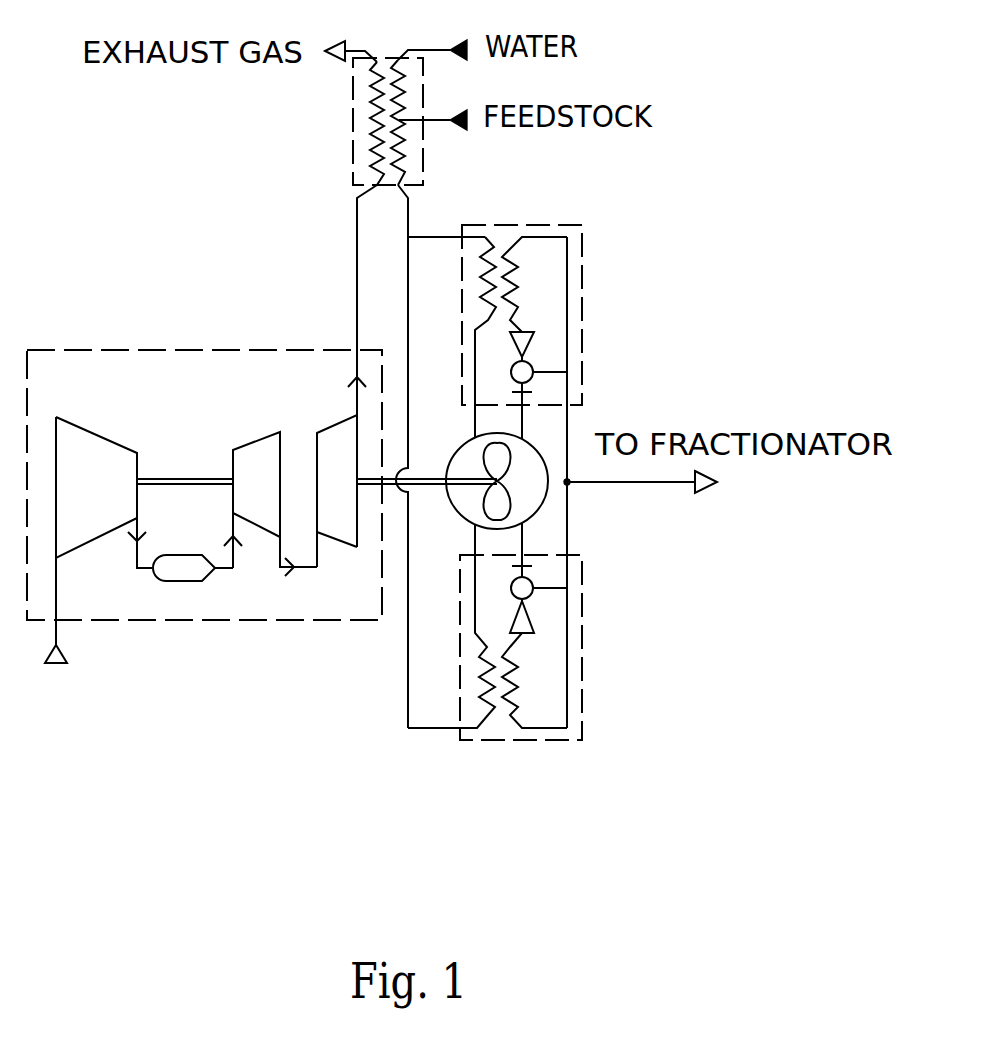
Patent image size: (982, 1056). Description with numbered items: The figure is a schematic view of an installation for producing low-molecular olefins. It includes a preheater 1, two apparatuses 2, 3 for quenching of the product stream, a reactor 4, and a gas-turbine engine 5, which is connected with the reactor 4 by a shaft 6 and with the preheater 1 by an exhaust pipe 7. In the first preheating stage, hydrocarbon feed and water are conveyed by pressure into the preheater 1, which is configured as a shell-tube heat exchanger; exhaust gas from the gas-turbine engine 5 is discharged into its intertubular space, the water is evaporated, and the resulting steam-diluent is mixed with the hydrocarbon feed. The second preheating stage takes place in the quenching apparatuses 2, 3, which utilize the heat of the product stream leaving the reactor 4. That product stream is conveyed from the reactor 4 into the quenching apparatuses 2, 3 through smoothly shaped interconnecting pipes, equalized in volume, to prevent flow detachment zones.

The preheater 1 is at (373, 121).
The apparatus for quenching of product stream 2 is at (503, 332).
The apparatus for quenching of product stream 3 is at (495, 631).
The reactor 4 is at (501, 478).
The gas-turbine engine 5 is at (97, 518).
The shaft 6 is at (317, 463).
The exhaust pipe 7 is at (204, 485).